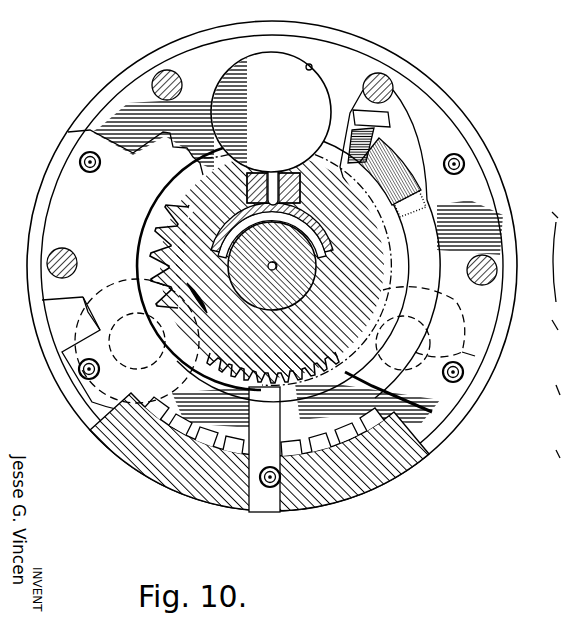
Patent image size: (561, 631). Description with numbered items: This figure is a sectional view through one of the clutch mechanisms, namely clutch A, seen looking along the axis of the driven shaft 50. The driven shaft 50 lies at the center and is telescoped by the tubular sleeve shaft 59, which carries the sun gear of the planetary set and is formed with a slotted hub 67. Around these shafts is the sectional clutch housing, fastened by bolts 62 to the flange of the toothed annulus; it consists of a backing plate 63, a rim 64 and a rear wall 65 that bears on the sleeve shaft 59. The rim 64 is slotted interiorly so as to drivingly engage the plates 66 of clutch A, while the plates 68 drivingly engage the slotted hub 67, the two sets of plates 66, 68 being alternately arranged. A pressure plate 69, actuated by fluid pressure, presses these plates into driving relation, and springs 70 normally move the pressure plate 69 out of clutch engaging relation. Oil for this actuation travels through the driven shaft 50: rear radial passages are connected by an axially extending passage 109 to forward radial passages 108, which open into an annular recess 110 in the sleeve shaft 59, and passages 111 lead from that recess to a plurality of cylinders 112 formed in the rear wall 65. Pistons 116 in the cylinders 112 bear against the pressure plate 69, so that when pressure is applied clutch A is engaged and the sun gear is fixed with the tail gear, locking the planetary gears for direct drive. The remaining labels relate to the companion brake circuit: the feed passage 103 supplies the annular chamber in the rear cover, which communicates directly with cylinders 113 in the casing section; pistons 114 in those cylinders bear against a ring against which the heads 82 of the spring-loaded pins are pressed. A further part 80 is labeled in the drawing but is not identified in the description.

The driven shaft 50 is at (305, 263).
The tubular sleeve shaft 59 is at (275, 226).
The bolts 62 is at (157, 80).
The backing plate 63 is at (477, 207).
The rim 64 is at (405, 118).
The rear wall 65 is at (355, 67).
The clutch plates 66 is at (400, 100).
The slotted hub 67 is at (187, 213).
The clutch plates 68 is at (360, 180).
The pressure plate 69 is at (67, 180).
The springs 70 is at (82, 157).
The forward radial passages 108 is at (230, 255).
The axially extending passage 109 is at (240, 290).
The annular recess 110 is at (252, 173).
The passages 111 is at (278, 170).
The cylinders 112 is at (312, 66).
The pistons 116 is at (65, 330).
The clutch A is at (321, 424).
The adjacent figure part 80 is at (556, 265).
The pin heads 82 is at (544, 333).
The feed passage 103 is at (545, 461).
The cylinders 113 is at (545, 397).
The pistons 114 is at (544, 205).